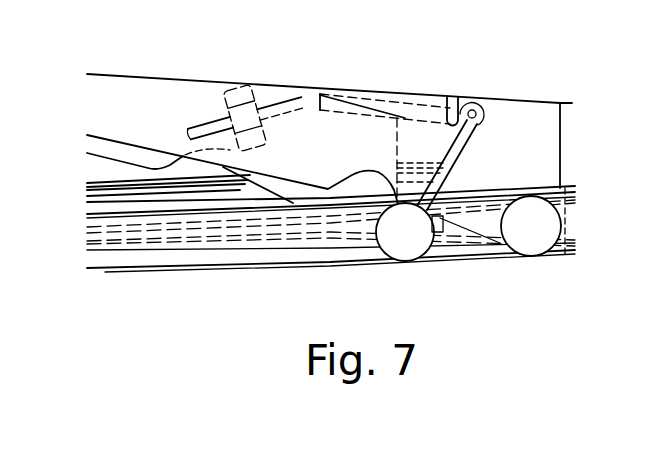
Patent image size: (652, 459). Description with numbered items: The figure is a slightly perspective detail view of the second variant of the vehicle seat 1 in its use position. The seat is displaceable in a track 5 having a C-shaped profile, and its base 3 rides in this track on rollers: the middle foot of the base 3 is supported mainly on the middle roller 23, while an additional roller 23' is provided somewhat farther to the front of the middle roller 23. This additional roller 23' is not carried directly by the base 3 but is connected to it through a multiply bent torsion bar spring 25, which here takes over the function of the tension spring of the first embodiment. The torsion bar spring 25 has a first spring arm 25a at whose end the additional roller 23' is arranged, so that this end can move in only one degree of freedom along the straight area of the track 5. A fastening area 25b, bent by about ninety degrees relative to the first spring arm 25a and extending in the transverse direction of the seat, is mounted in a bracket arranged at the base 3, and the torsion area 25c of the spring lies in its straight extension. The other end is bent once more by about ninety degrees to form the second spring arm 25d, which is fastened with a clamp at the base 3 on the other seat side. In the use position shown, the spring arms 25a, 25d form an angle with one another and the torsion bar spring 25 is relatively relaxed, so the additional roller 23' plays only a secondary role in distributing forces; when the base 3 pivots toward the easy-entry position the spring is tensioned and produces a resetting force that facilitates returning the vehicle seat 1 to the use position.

The vehicle seat 1 is at (80, 132).
The base 3 is at (510, 152).
The track 5 is at (570, 232).
The middle roller 23 is at (532, 251).
The additional roller 23' is at (396, 254).
The torsion bar spring 25 is at (345, 103).
The first spring arm 25a is at (447, 172).
The fastening area 25b is at (474, 113).
The torsion area 25c is at (405, 117).
The second spring arm 25d is at (228, 130).